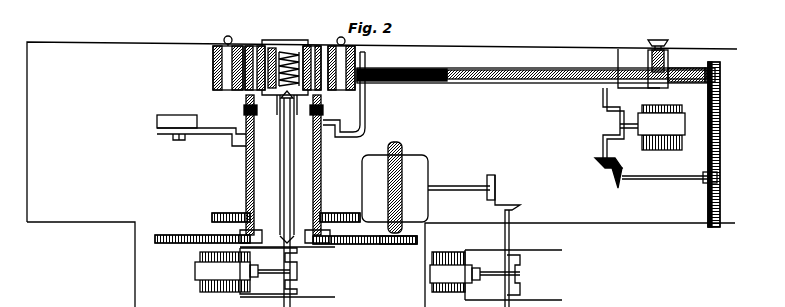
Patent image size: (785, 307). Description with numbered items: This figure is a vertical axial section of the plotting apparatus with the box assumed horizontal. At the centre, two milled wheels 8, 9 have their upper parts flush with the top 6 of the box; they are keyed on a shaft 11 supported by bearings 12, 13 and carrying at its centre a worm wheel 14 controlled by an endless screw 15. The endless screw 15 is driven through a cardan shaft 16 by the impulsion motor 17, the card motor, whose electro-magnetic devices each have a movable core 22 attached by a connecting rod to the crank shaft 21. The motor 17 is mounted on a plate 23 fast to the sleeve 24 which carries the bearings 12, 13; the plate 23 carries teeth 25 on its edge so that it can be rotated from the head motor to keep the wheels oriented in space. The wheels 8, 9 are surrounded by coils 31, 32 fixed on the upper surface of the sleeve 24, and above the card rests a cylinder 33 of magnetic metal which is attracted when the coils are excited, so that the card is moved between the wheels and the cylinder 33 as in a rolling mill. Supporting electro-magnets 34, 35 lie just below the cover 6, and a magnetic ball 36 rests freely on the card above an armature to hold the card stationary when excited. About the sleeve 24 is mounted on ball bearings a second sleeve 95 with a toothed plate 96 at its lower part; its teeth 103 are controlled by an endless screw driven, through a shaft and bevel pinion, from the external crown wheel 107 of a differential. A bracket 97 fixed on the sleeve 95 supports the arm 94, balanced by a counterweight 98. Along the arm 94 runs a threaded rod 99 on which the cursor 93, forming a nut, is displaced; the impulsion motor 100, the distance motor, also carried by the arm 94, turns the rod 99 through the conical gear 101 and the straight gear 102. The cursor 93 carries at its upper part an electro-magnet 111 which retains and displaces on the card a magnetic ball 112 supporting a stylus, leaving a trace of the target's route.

The top of the box 6 is at (113, 53).
The milled wheel 8 is at (262, 50).
The milled wheel 9 is at (305, 50).
The shaft 11 is at (250, 48).
The bearing 12 is at (250, 93).
The bearing 13 is at (314, 92).
The worm wheel 14 is at (293, 97).
The endless screw 15 is at (283, 95).
The cardan shaft 16 is at (284, 210).
The impulsion motor 17 is at (200, 272).
The crank shaft 21 is at (297, 282).
The movable core 22 is at (250, 278).
The plate 23 is at (340, 248).
The sleeve 24 is at (252, 188).
The teeth 25 is at (408, 250).
The coil 31 is at (248, 95).
The coil 32 is at (318, 95).
The cylinder 33 is at (285, 42).
The supporting electro-magnet 34 is at (413, 75).
The supporting electro-magnet 35 is at (213, 67).
The magnetic ball 36 is at (348, 43).
The cursor 93 is at (665, 72).
The arm 94 is at (622, 85).
The second sleeve 95 is at (322, 184).
The toothed plate 96 is at (335, 212).
The bracket 97 is at (363, 118).
The counterweight 98 is at (163, 121).
The threaded rod 99 is at (693, 72).
The impulsion motor 100 is at (652, 138).
The conical gear 101 is at (648, 176).
The straight gear 102 is at (720, 150).
The teeth 103 is at (212, 213).
The external crown wheel 107 is at (405, 142).
The electro-magnet 111 is at (650, 50).
The magnetic ball 112 is at (657, 42).